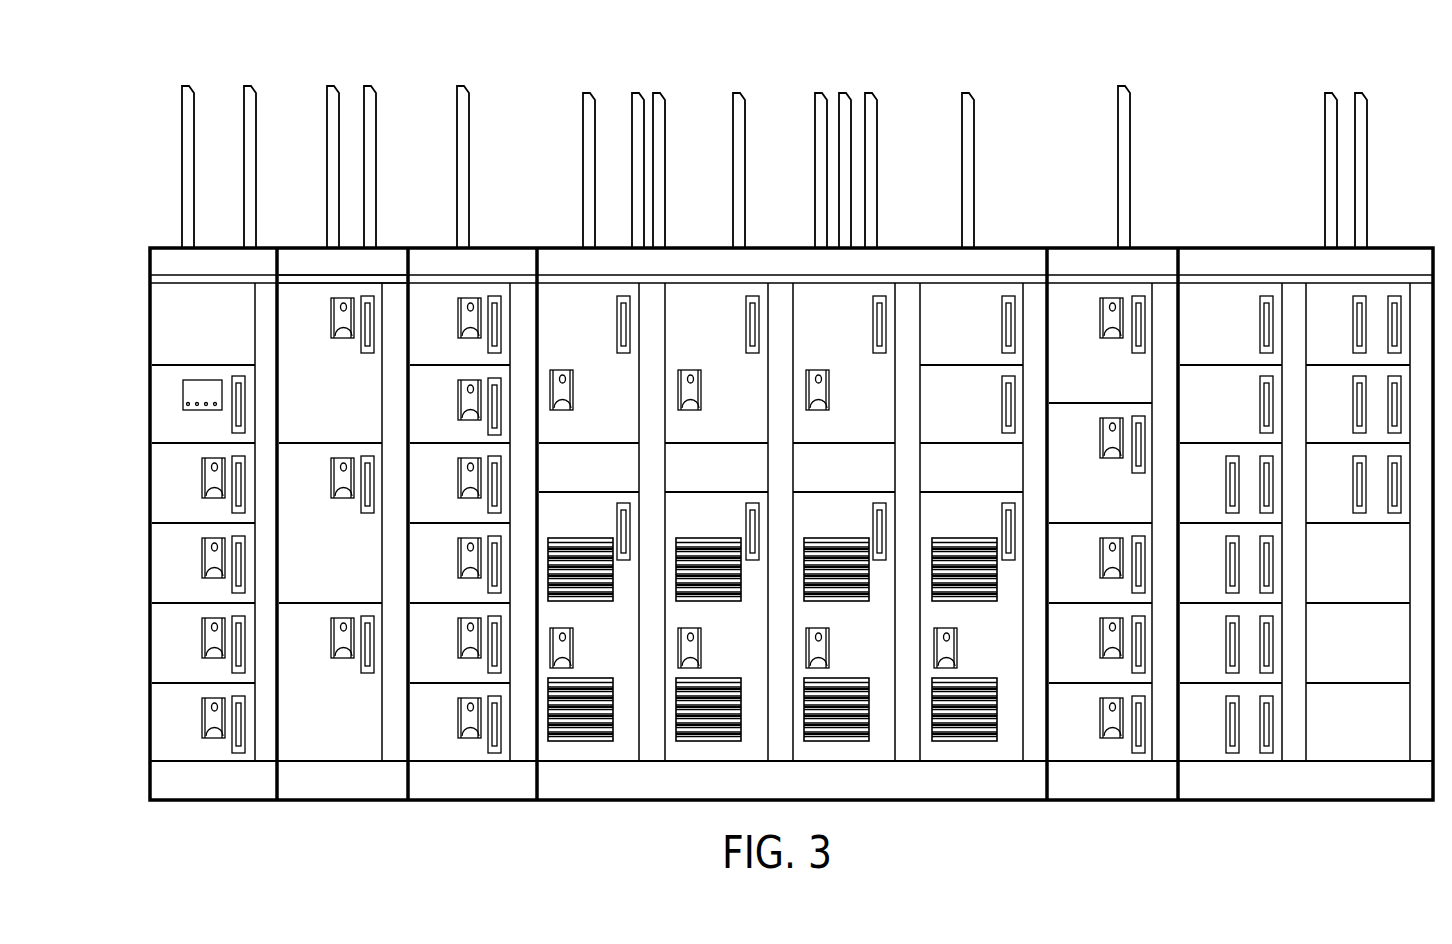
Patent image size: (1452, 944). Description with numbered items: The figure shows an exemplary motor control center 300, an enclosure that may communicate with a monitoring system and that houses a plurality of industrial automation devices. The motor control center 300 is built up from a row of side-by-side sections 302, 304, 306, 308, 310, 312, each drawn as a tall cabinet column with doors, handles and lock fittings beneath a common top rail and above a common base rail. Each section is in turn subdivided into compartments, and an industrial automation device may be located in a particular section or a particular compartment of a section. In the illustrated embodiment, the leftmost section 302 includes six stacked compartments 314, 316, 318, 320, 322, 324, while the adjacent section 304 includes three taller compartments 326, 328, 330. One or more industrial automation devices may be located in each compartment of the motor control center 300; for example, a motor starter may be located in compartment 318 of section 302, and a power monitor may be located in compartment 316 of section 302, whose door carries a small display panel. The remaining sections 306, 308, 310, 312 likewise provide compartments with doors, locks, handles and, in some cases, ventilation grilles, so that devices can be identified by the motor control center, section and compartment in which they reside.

The motor control center 300 is at (1006, 70).
The section 302 is at (150, 325).
The section 304 is at (382, 248).
The section 306 is at (506, 248).
The section 308 is at (706, 248).
The section 310 is at (1140, 248).
The section 312 is at (1262, 248).
The compartment 314 is at (182, 314).
The compartment 316 is at (168, 384).
The compartment 318 is at (168, 470).
The compartment 320 is at (168, 550).
The compartment 322 is at (168, 632).
The compartment 324 is at (168, 714).
The compartment 326 is at (306, 281).
The compartment 328 is at (302, 568).
The compartment 330 is at (345, 725).